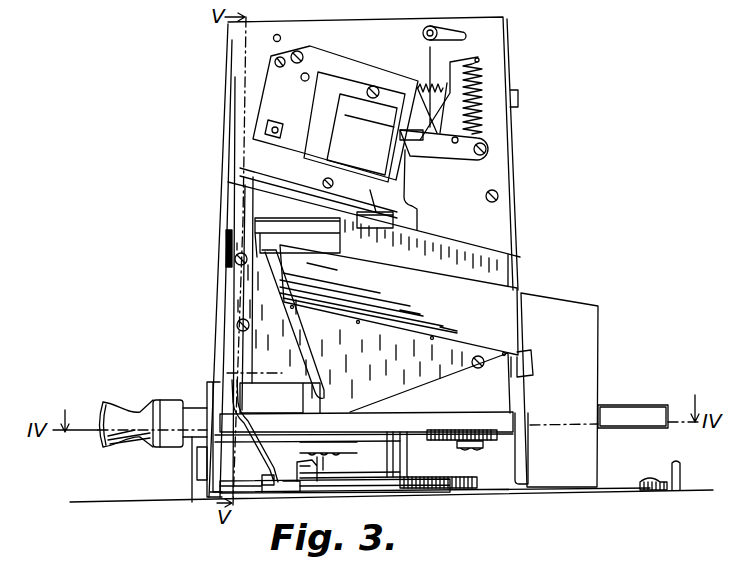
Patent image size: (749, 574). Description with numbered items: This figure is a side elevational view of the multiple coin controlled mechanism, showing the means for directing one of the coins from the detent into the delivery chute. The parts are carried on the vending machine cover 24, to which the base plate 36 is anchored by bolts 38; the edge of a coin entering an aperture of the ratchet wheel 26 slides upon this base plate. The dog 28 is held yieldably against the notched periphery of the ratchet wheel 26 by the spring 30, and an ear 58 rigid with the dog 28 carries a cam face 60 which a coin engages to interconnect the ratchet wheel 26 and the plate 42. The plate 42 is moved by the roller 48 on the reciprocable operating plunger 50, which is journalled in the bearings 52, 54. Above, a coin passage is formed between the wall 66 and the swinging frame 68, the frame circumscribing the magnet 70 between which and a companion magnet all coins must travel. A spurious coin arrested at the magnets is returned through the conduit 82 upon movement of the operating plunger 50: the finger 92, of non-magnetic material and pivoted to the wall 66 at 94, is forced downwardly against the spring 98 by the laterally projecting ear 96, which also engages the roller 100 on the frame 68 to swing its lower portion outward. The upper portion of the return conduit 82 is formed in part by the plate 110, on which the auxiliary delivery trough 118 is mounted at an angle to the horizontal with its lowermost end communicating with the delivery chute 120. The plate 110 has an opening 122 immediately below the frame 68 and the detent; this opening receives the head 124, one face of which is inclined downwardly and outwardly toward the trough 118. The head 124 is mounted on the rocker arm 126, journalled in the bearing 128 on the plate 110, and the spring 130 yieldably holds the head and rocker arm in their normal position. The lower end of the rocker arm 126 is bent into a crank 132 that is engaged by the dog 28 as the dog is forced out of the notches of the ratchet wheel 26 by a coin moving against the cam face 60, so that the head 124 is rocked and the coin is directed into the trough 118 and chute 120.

The vending machine cover 24 is at (705, 490).
The ratchet wheel 26 is at (478, 488).
The dog 28 is at (290, 487).
The spring 30 is at (261, 463).
The base plate 36 is at (622, 490).
The bolts 38 is at (648, 480).
The plate 42 is at (442, 453).
The roller 48 is at (470, 448).
The operating plunger 50 is at (622, 408).
The bearing 52 is at (521, 456).
The bearing 54 is at (209, 384).
The ear 58 is at (310, 489).
The cam face 60 is at (318, 465).
The wall 66 is at (503, 33).
The swinging frame 68 is at (353, 66).
The magnet 70 is at (354, 127).
The conduit 82 is at (203, 466).
The finger 92 is at (451, 135).
The pivot 94 is at (491, 150).
The laterally projecting ear 96 is at (482, 78).
The spring 98 is at (443, 100).
The roller 100 is at (410, 168).
The plate 110 is at (480, 259).
The auxiliary delivery trough 118 is at (399, 329).
The delivery chute 120 is at (559, 390).
The opening 122 is at (345, 240).
The head 124 is at (332, 250).
The rocker arm 126 is at (306, 368).
The bearing 128 is at (280, 398).
The spring 130 is at (364, 426).
The crank 132 is at (245, 490).